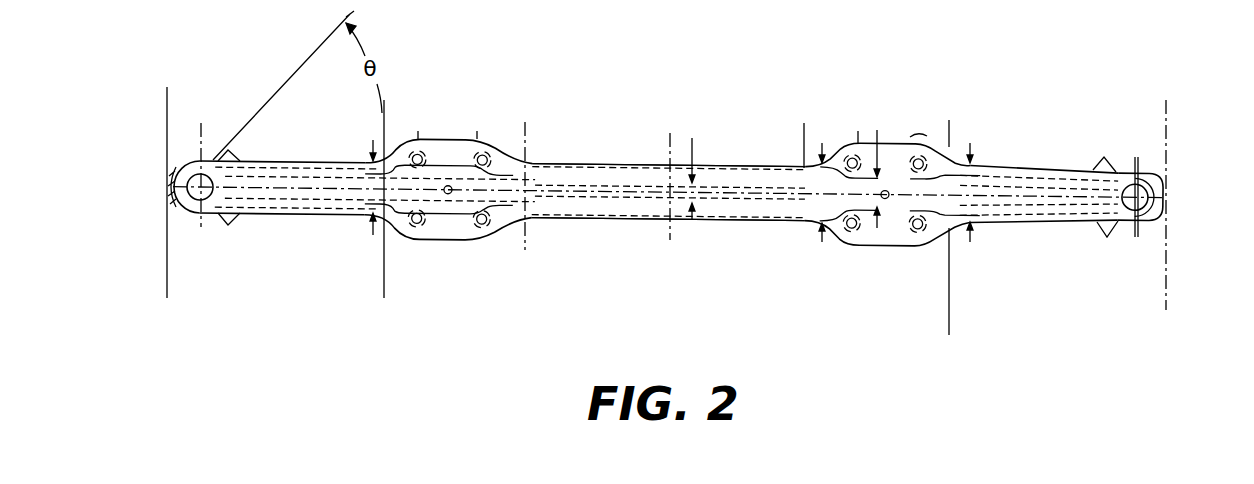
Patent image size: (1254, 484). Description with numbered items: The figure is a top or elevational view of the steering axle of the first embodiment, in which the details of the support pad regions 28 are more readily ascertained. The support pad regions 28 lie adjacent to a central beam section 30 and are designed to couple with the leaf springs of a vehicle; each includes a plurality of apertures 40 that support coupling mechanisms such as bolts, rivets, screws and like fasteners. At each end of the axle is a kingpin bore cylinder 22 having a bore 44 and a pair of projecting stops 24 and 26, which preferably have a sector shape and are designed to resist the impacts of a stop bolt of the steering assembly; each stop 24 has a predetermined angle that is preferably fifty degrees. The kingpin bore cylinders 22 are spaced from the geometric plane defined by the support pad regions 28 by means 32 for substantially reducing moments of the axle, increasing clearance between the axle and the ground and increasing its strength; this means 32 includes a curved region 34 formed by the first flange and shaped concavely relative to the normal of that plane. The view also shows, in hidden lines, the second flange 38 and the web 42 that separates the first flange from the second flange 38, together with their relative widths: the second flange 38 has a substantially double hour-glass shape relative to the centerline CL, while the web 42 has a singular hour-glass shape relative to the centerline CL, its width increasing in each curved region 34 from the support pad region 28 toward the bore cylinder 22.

The kingpin bore cylinder 22 is at (1150, 238).
The first projecting stop 24 is at (230, 220).
The second projecting stop 26 is at (228, 154).
The support pad region 28 is at (445, 140).
The central beam section 30 is at (542, 112).
The means for reducing moments 32 is at (167, 298).
The curved region 34 is at (304, 184).
The second flange 38 is at (556, 162).
The aperture 40 is at (481, 226).
The web 42 is at (568, 205).
The bore 44 is at (1147, 172).
The centerline CL is at (672, 240).